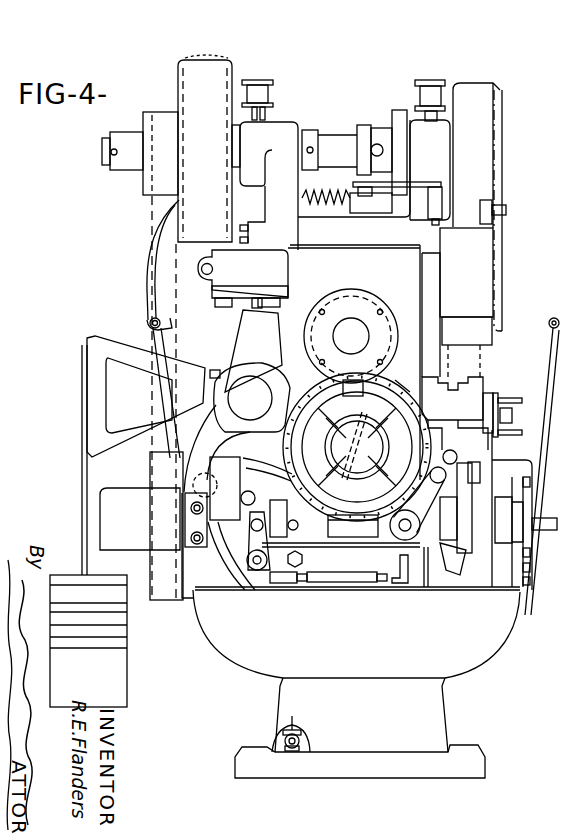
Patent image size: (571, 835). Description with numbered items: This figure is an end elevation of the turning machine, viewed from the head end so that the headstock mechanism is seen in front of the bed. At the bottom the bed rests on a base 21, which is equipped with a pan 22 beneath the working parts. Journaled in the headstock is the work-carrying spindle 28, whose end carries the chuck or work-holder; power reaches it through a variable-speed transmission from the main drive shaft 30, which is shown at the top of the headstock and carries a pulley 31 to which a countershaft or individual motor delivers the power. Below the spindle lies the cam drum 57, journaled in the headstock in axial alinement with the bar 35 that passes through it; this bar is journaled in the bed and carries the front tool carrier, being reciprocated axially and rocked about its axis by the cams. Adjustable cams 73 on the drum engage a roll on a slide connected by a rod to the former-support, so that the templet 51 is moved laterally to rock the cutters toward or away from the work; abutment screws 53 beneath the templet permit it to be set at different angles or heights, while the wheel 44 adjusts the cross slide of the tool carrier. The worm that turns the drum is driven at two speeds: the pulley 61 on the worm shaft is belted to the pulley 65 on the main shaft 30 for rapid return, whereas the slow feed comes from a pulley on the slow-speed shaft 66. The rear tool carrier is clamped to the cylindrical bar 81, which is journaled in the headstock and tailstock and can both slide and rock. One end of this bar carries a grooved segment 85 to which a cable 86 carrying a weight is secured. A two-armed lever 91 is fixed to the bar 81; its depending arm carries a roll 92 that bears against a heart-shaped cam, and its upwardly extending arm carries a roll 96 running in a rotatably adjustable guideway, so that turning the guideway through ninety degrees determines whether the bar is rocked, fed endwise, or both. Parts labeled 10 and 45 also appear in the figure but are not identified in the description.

The machine 10 is at (548, 471).
The base 21 is at (360, 728).
The pan 22 is at (490, 638).
The work-carrying spindle 28 is at (356, 318).
The main drive shaft 30 is at (330, 145).
The pulley 31 is at (213, 62).
The bar 35 is at (362, 458).
The wheel 44 is at (494, 405).
The lever 45 is at (443, 542).
The templet 51 is at (470, 483).
The abutment screws 53 is at (480, 466).
The cam drum 57 is at (357, 439).
The pulley 61 is at (166, 598).
The pulley 65 is at (148, 178).
The shaft 66 is at (424, 258).
The adjustable cams 73 is at (400, 388).
The cylindrical bar 81 is at (238, 407).
The grooved segment 85 is at (103, 352).
The cable 86 is at (84, 482).
The two-armed lever 91 is at (220, 397).
The roll 92 is at (177, 484).
The roll 96 is at (256, 306).